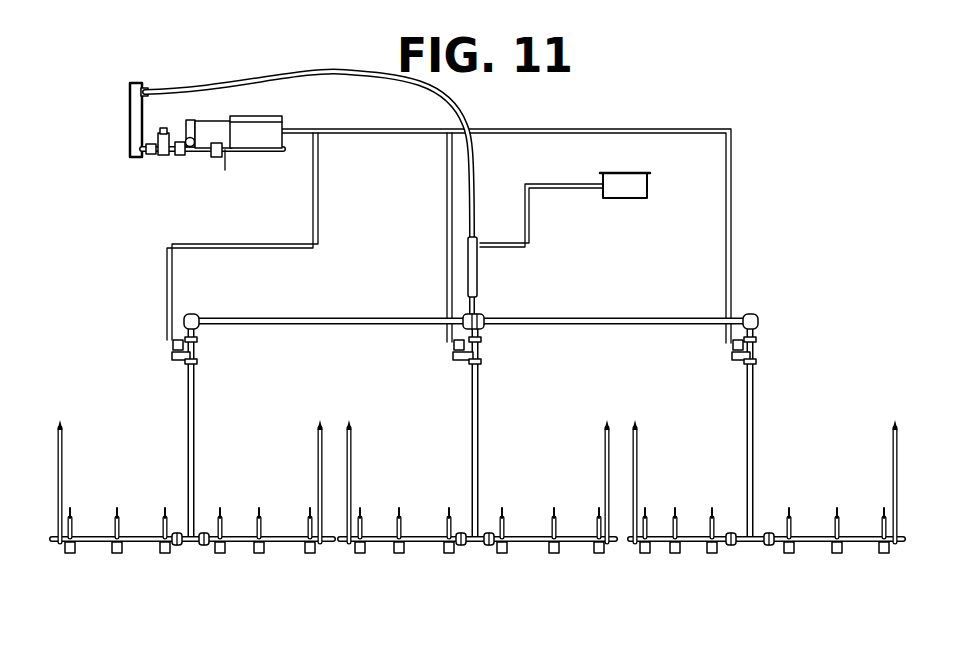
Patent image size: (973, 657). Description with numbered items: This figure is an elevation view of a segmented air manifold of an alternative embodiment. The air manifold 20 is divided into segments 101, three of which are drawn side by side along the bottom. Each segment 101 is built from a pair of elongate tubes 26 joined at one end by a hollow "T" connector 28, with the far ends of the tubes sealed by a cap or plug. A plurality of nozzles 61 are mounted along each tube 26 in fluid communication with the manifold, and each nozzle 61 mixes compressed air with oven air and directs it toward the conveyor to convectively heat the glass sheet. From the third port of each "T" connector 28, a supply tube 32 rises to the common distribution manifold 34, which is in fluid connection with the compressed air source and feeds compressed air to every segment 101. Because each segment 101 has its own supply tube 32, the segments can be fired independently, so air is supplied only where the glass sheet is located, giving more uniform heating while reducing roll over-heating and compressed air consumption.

The air manifold 20 is at (438, 410).
The elongate tube 26 is at (137, 550).
The "T" connector 28 is at (192, 530).
The supply tube 32 is at (195, 390).
The distribution manifold 34 is at (472, 272).
The nozzle 61 is at (73, 520).
The segment 101 is at (282, 550).